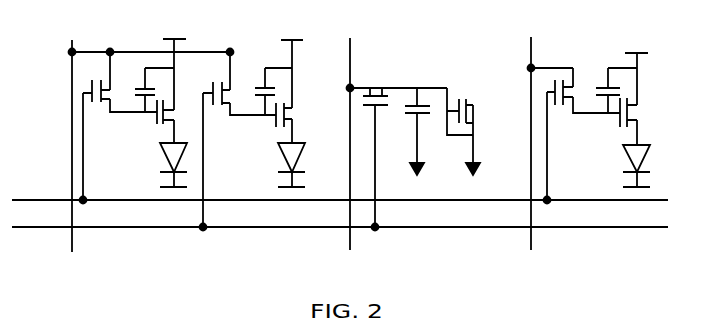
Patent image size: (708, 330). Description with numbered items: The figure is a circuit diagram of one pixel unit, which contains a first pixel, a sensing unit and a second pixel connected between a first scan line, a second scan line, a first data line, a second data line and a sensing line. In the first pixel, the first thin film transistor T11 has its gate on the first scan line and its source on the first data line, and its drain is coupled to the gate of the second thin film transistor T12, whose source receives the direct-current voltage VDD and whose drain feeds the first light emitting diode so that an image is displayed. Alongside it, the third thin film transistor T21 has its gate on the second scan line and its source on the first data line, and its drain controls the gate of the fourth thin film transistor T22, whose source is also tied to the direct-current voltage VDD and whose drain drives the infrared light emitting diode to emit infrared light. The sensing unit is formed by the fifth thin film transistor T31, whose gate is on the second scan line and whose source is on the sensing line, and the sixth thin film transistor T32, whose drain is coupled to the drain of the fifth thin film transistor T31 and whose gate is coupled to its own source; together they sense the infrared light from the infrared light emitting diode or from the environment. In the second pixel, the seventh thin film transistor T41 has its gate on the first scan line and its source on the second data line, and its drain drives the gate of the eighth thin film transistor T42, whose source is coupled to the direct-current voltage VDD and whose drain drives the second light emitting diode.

The first thin film transistor T11 is at (99, 107).
The second thin film transistor T12 is at (148, 120).
The third thin film transistor T21 is at (211, 84).
The fourth thin film transistor T22 is at (274, 124).
The fifth thin film transistor T31 is at (373, 88).
The sixth thin film transistor T32 is at (463, 101).
The seventh thin film transistor T41 is at (561, 107).
The eighth thin film transistor T42 is at (610, 122).
The direct-current voltage VDD is at (406, 64).